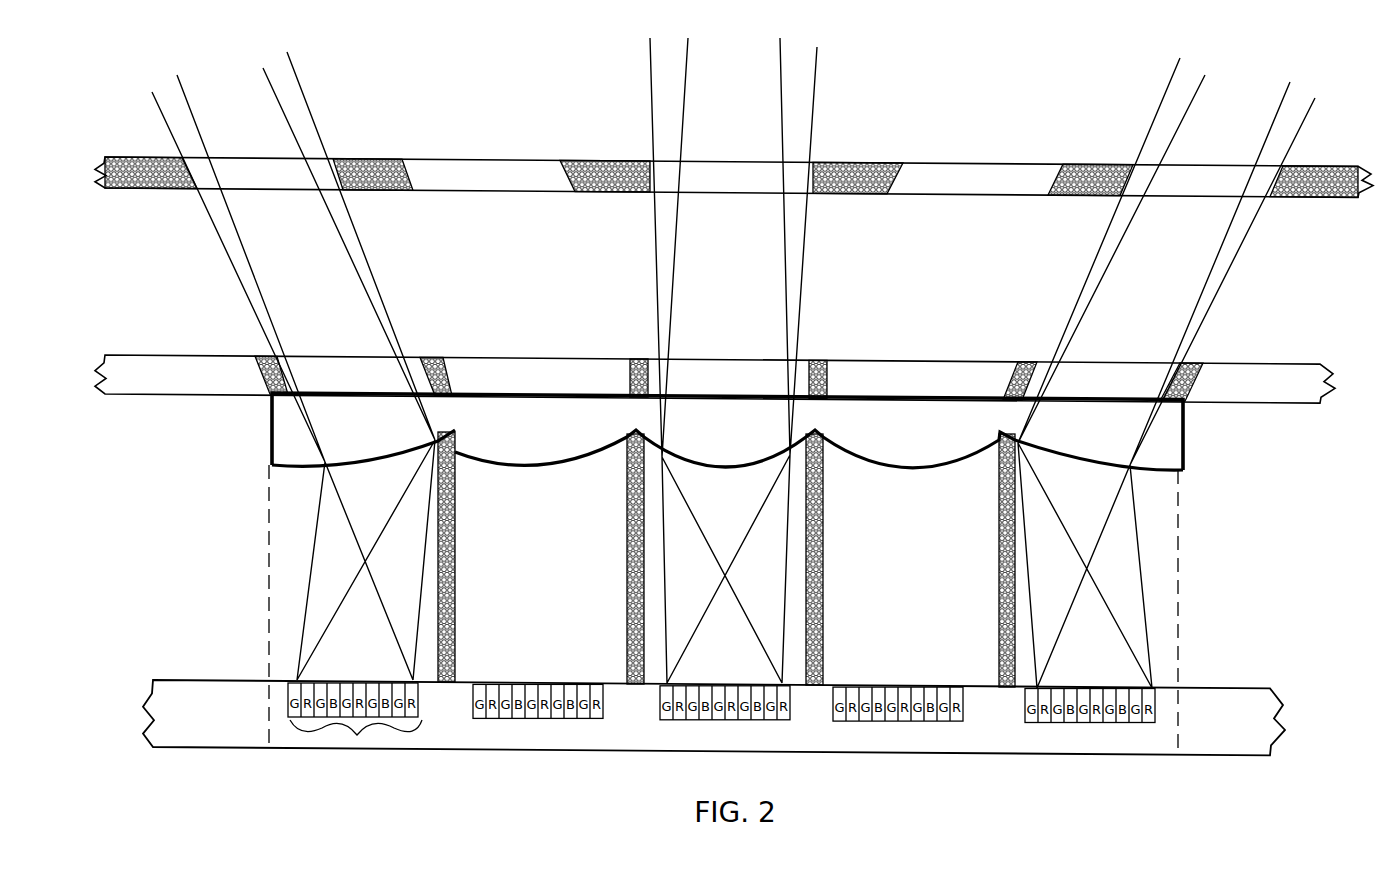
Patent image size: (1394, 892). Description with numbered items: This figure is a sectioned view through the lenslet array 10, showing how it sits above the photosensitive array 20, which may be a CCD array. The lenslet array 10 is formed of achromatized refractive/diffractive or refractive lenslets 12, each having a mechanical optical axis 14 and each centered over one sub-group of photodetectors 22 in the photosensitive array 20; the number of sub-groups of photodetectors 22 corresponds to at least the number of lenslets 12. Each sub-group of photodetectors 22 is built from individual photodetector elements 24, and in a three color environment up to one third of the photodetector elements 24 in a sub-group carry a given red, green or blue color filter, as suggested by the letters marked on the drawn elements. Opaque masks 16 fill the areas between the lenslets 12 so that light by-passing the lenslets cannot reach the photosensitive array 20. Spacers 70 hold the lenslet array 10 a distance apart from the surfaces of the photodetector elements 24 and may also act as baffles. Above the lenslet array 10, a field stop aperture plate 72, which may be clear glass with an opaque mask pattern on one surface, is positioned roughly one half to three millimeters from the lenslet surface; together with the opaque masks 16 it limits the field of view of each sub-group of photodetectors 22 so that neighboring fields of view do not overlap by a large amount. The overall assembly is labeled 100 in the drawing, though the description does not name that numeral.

The lenslet array 10 is at (1186, 434).
The lenslet 12 is at (292, 458).
The mechanical optical axis 14 is at (583, 458).
The opaque mask 16 is at (437, 355).
The photosensitive array 20 is at (260, 717).
The sub-group of photodetectors 22 is at (357, 735).
The photodetector element 24 is at (350, 685).
The spacer 70 is at (455, 548).
The field stop aperture plate 72 is at (910, 160).
The display device 100 is at (242, 750).